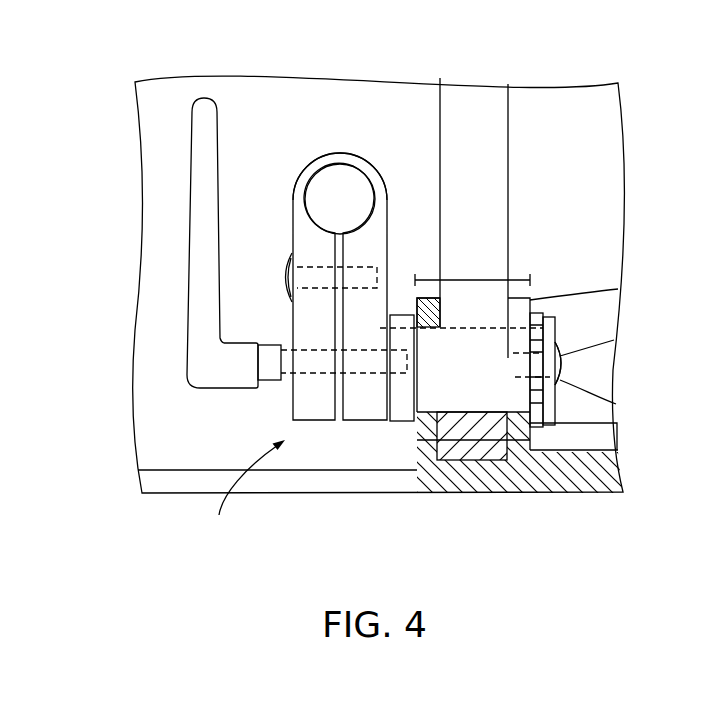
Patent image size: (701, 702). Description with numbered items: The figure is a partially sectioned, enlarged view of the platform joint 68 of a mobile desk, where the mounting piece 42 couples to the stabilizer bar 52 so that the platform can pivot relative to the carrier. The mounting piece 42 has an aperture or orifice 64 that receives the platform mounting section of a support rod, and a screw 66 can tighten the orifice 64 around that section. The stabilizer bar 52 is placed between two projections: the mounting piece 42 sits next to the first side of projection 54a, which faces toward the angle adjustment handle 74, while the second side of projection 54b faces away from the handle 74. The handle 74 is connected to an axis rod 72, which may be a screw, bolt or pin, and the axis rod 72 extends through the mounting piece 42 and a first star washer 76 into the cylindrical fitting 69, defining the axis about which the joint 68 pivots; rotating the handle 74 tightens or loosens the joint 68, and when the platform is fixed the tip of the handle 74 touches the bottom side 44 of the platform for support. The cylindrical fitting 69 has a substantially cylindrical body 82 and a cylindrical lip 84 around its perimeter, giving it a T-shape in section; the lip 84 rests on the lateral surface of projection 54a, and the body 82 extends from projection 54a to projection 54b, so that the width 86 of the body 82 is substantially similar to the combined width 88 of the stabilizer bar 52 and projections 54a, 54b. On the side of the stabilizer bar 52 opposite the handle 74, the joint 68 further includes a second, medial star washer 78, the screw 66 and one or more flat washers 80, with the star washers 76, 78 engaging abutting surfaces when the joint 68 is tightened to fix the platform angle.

The mounting piece 42 is at (352, 155).
The bottom side of platform 44 is at (148, 433).
The stabilizer bar 52 is at (510, 186).
The first side of projection 54a is at (530, 380).
The second side of projection 54b is at (535, 308).
The aperture or orifice 64 is at (322, 190).
The screw 66 is at (282, 264).
The platform joint 68 is at (244, 494).
The cylindrical fitting 69 is at (536, 432).
The axis rod 72 is at (305, 379).
The angle adjustment handle 74 is at (187, 333).
The first star washer 76 is at (383, 397).
The second star washer 78 is at (552, 388).
The flat washer 80 is at (537, 403).
The cylindrical body 82 is at (460, 358).
The cylindrical lip 84 is at (407, 423).
The width of body 86 is at (497, 437).
The combined width 88 is at (518, 277).